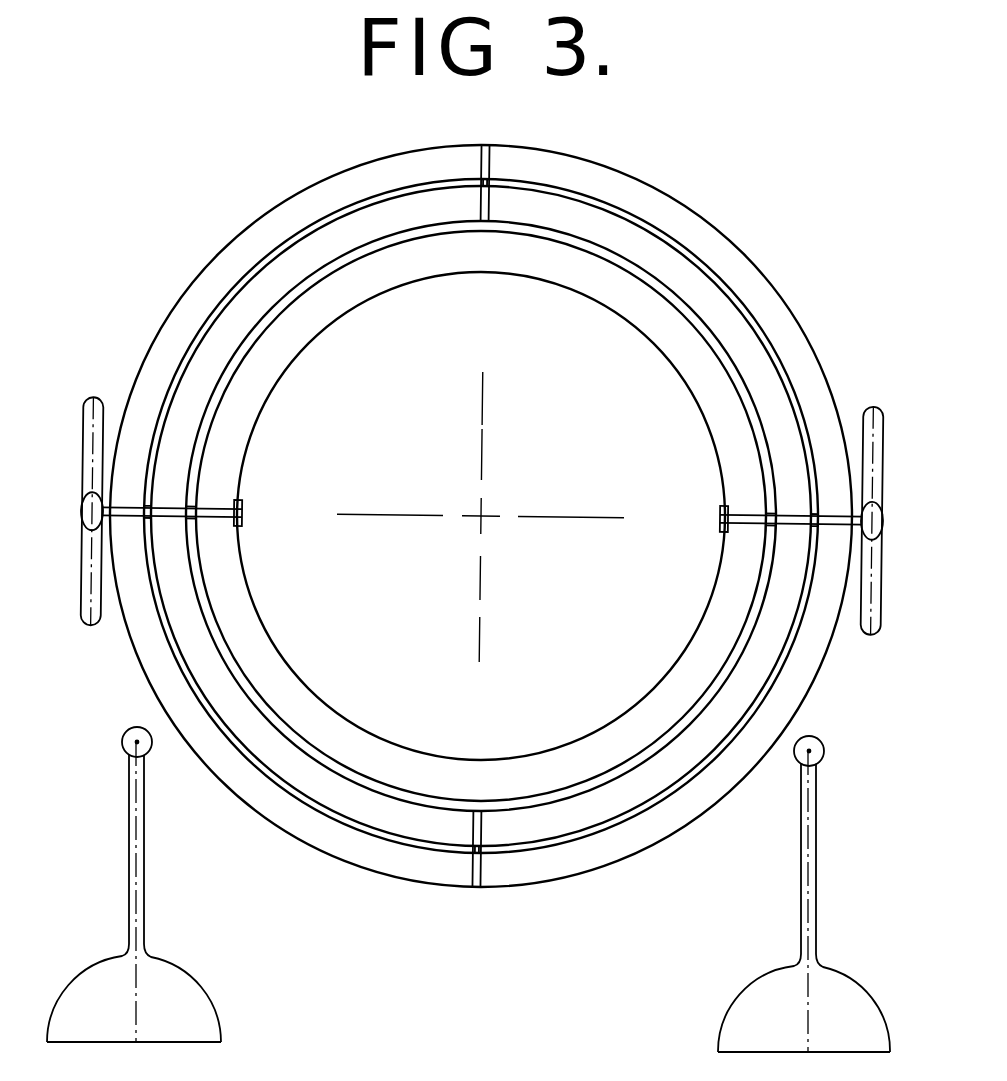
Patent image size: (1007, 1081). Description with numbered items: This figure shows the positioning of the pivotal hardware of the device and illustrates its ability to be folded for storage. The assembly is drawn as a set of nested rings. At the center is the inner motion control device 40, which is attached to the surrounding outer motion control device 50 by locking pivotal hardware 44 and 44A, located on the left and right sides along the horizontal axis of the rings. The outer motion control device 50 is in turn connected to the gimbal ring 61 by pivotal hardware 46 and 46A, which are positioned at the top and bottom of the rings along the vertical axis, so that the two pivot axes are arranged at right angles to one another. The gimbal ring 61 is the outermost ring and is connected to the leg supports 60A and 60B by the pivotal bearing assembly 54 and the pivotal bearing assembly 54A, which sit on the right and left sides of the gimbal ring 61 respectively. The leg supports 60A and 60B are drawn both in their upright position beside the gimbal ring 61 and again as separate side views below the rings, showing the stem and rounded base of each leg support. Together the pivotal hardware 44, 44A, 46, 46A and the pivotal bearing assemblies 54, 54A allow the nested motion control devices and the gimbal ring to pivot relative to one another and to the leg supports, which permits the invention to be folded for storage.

The gimbal ring 61 is at (680, 198).
The outer motion control device 50 is at (641, 257).
The inner motion control device 40 is at (661, 343).
The pivotal hardware 46 is at (493, 139).
The pivotal hardware 46A is at (479, 888).
The locking pivotal hardware 44 is at (245, 504).
The locking pivotal hardware 44A is at (718, 511).
The leg support 60B is at (96, 397).
The leg support 60A is at (870, 407).
The pivotal bearing assembly 54 is at (84, 497).
The pivotal bearing assembly 54A is at (881, 507).